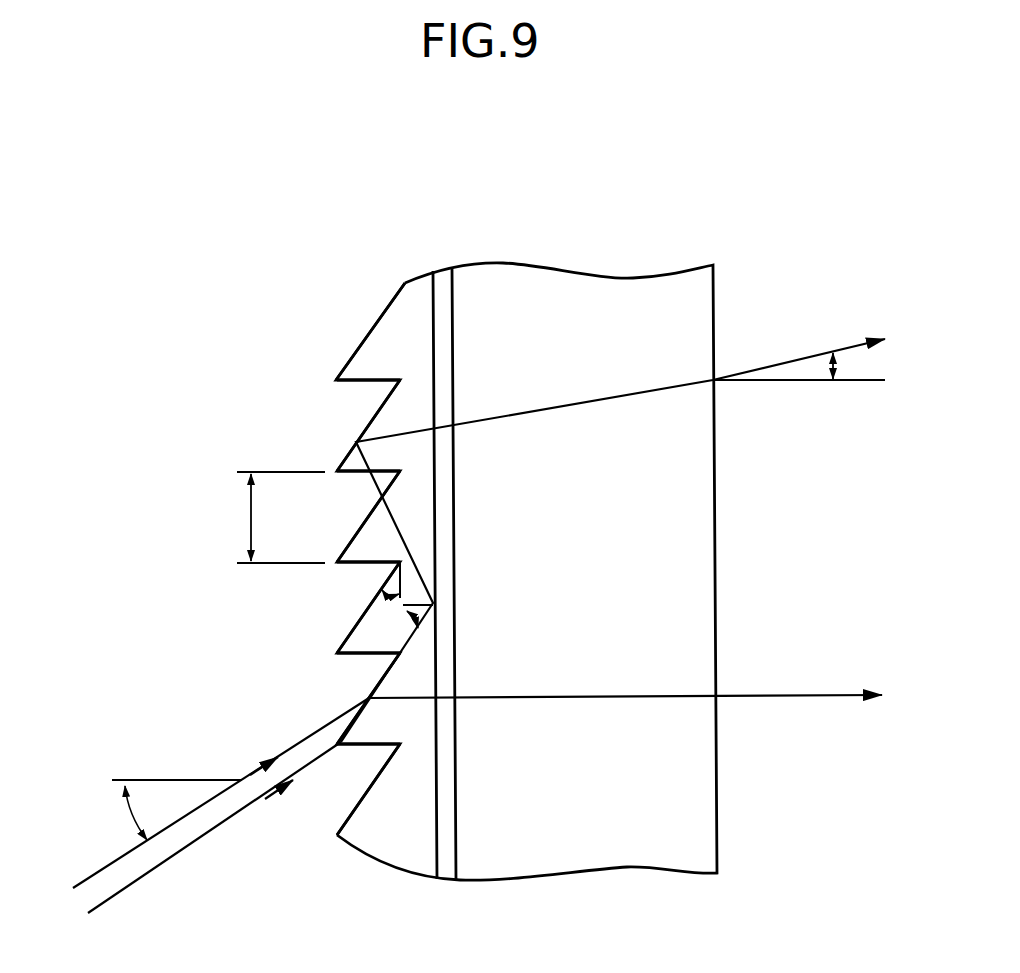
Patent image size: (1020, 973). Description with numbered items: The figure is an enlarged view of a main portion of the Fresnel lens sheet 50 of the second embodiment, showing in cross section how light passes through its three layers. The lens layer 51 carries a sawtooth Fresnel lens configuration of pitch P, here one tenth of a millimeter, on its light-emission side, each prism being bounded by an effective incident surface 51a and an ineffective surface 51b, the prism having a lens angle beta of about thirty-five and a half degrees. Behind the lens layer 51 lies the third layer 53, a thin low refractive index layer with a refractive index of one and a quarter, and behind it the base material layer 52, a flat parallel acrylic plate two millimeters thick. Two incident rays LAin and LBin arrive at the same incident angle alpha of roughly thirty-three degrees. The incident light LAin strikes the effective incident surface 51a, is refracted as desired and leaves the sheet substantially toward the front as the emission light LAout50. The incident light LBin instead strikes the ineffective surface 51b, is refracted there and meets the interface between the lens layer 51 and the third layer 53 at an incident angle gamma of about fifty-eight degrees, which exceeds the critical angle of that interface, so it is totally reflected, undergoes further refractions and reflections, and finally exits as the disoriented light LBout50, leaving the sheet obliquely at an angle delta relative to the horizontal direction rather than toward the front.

The Fresnel lens sheet 50 is at (496, 494).
The lens layer 51 is at (341, 527).
The incident surface 51a is at (365, 333).
The ineffective surface 51b is at (362, 381).
The base material layer 52 is at (583, 293).
The third layer 53 is at (438, 282).
The incident light LAin is at (93, 877).
The incident light LBin is at (117, 896).
The emission light LAout50 is at (800, 698).
The disoriented light LBout50 is at (790, 360).
The incident angle alpha is at (127, 815).
The lens angle beta is at (385, 598).
The incident angle gamma is at (402, 623).
The exit angle δ delta is at (838, 363).
The pitch P is at (250, 518).